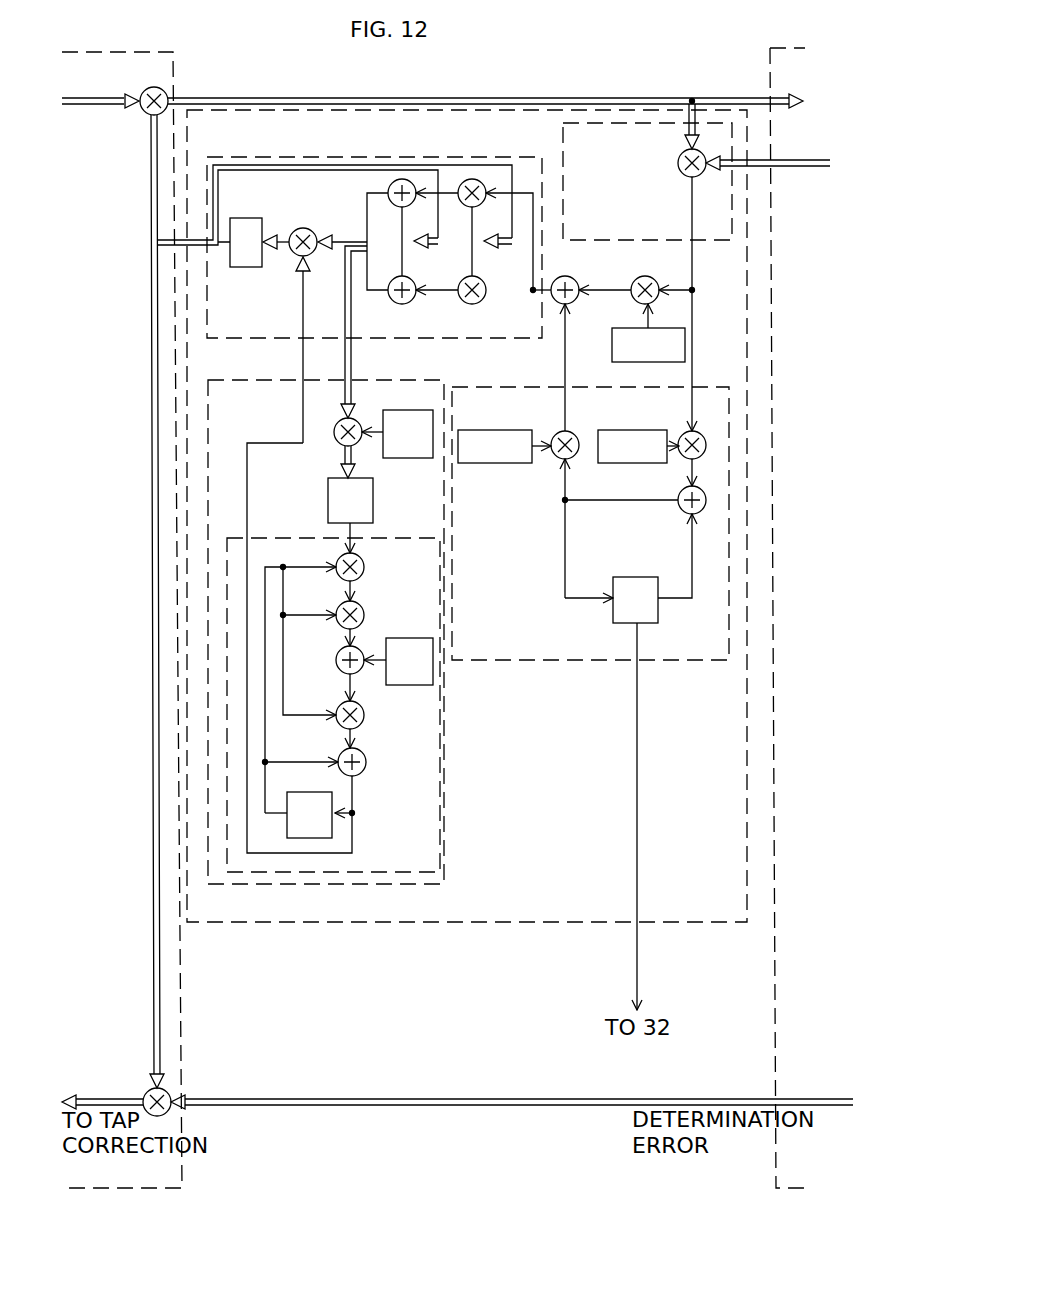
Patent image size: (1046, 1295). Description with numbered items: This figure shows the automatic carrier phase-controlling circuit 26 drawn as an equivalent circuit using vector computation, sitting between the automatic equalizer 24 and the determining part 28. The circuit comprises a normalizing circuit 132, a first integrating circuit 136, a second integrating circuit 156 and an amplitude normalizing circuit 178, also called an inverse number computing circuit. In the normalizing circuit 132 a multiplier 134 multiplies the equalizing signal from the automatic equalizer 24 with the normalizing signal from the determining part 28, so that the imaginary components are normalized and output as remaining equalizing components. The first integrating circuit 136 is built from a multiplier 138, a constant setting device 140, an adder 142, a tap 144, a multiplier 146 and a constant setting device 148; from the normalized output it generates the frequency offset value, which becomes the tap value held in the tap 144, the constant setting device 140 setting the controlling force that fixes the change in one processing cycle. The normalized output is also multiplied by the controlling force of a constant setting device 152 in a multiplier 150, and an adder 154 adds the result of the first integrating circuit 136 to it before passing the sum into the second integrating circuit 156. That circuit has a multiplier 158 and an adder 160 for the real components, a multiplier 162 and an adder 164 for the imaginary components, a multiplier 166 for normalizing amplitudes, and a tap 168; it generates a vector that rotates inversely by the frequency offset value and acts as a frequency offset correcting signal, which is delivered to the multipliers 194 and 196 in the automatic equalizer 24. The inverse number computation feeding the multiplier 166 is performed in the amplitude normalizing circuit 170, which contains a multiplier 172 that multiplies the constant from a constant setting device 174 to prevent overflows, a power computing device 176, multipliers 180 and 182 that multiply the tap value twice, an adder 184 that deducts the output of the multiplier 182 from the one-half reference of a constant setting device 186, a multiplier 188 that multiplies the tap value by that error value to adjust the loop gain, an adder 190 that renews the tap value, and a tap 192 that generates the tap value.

The automatic equalizer 24 is at (177, 52).
The automatic carrier phase-controlling circuit 26 is at (405, 101).
The determining part 28 is at (770, 48).
The normalizing circuit 132 is at (563, 150).
The multiplier 134 is at (680, 160).
The first integrating circuit 136 is at (500, 660).
The multiplier 138 is at (683, 434).
The constant setting device 140 is at (600, 464).
The adder 142 is at (680, 510).
The tap 144 is at (610, 623).
The multiplier 146 is at (562, 460).
The constant setting device 148 is at (490, 430).
The multiplier 150 is at (647, 277).
The constant setting device 152 is at (612, 338).
The adder 154 is at (560, 280).
The second integrating circuit 156 is at (482, 157).
The multiplier 158 is at (462, 181).
The adder 160 is at (392, 180).
The multiplier 162 is at (468, 304).
The adder 164 is at (402, 304).
The multiplier 166 is at (303, 228).
The tap 168 is at (256, 205).
The amplitude normalizing circuit 170 is at (258, 381).
The multiplier 172 is at (338, 442).
The constant setting device 174 is at (398, 410).
The power computing device 176 is at (373, 500).
The amplitude normalizing circuit 178 is at (287, 538).
The multiplier 180 is at (364, 569).
The multiplier 182 is at (364, 618).
The adder 184 is at (336, 654).
The constant setting device 186 is at (412, 685).
The multiplier 188 is at (364, 724).
The adder 190 is at (338, 758).
The tap 192 is at (333, 828).
The multiplier 194 is at (143, 93).
The multiplier 196 is at (168, 1093).